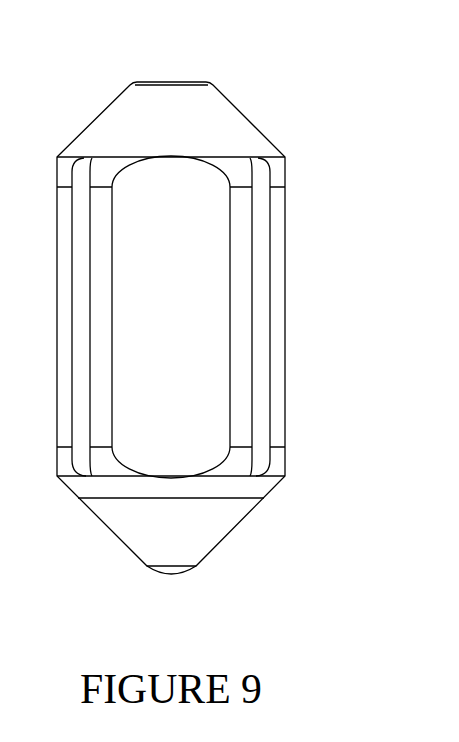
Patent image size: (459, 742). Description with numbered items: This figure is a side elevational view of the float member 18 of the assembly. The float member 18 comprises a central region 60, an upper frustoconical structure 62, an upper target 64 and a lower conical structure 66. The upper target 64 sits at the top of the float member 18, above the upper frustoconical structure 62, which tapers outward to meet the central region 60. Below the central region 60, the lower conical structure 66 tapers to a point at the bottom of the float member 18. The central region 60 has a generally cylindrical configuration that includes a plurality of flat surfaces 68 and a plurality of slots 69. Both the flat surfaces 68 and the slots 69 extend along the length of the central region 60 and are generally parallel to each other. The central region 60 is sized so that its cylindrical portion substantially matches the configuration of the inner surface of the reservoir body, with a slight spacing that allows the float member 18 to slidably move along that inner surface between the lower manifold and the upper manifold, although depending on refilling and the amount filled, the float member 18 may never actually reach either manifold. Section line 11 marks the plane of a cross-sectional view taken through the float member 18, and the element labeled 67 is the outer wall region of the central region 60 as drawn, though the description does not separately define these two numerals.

The section line 11- 11 is at (170, 81).
The float member 18 is at (350, 80).
The central region 60 is at (292, 318).
The upper frustoconical structure 62 is at (88, 118).
The upper target 64 is at (195, 78).
The lower conical structure 66 is at (90, 515).
The outer wall 67 is at (278, 237).
The flat surfaces 68 is at (210, 349).
The slots 69 is at (261, 411).